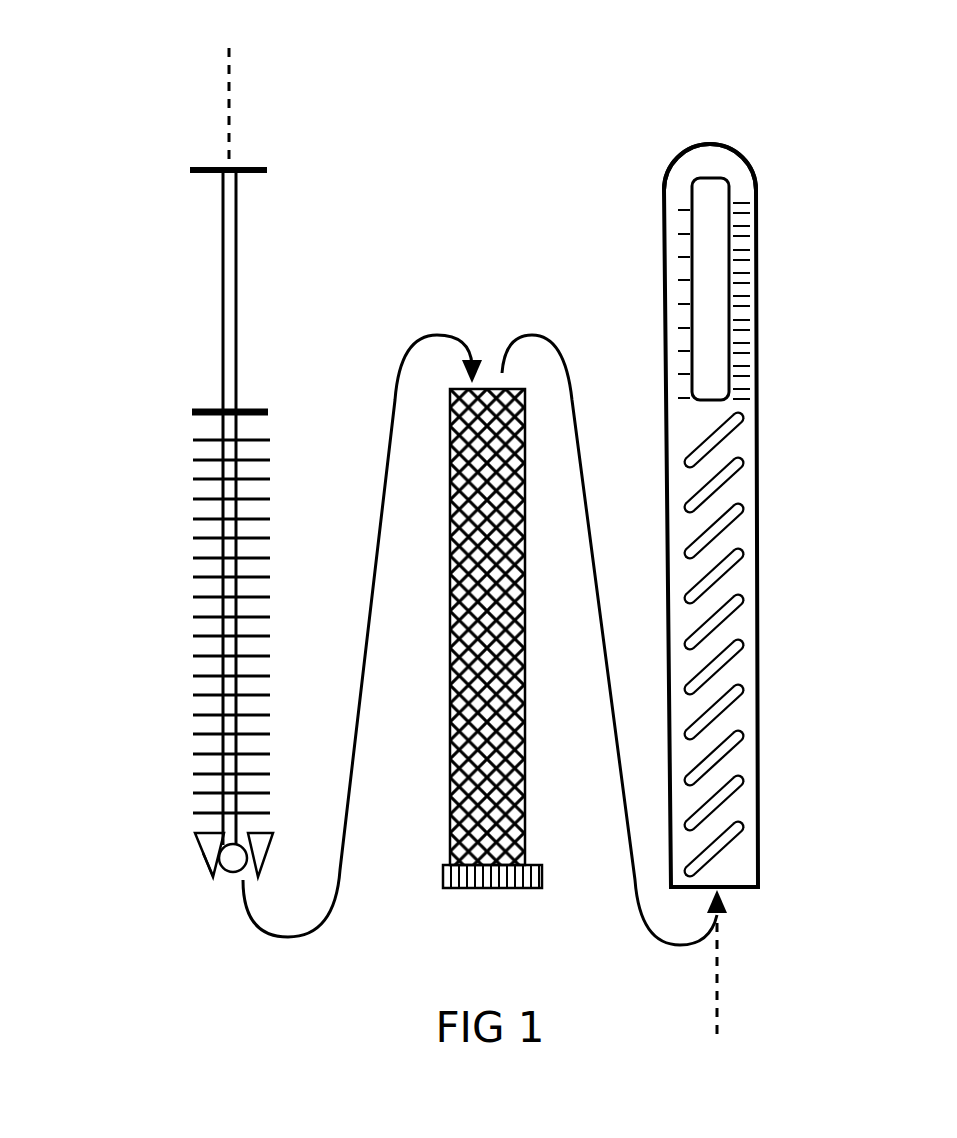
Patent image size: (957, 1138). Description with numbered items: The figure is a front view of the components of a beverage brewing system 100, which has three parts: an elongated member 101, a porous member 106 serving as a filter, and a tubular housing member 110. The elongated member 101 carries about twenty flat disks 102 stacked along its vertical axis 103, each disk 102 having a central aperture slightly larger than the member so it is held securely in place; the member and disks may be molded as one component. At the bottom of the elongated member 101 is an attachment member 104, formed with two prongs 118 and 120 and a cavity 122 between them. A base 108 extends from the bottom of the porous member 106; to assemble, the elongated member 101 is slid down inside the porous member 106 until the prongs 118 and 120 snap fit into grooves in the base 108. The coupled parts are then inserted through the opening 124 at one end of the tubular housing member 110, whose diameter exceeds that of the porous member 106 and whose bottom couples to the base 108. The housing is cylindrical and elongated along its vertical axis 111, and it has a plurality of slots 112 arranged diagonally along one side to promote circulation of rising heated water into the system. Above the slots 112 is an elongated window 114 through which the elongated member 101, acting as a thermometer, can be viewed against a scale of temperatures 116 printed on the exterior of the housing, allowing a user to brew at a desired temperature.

The beverage brewing system 100 is at (165, 228).
The elongated member 101 is at (229, 262).
The disks 102 is at (192, 498).
The vertical axis 103 is at (266, 84).
The attachment member 104 is at (203, 853).
The porous member 106 is at (483, 405).
The base 108 is at (537, 878).
The tubular housing member 110 is at (708, 165).
The vertical axis 111 is at (728, 1027).
The slots 112 is at (713, 442).
The elongated slot or window 114 is at (710, 293).
The scale of temperatures 116 is at (660, 202).
The prong 118 is at (195, 841).
The prong 120 is at (258, 850).
The cavity 122 is at (215, 840).
The opening 124 is at (737, 887).